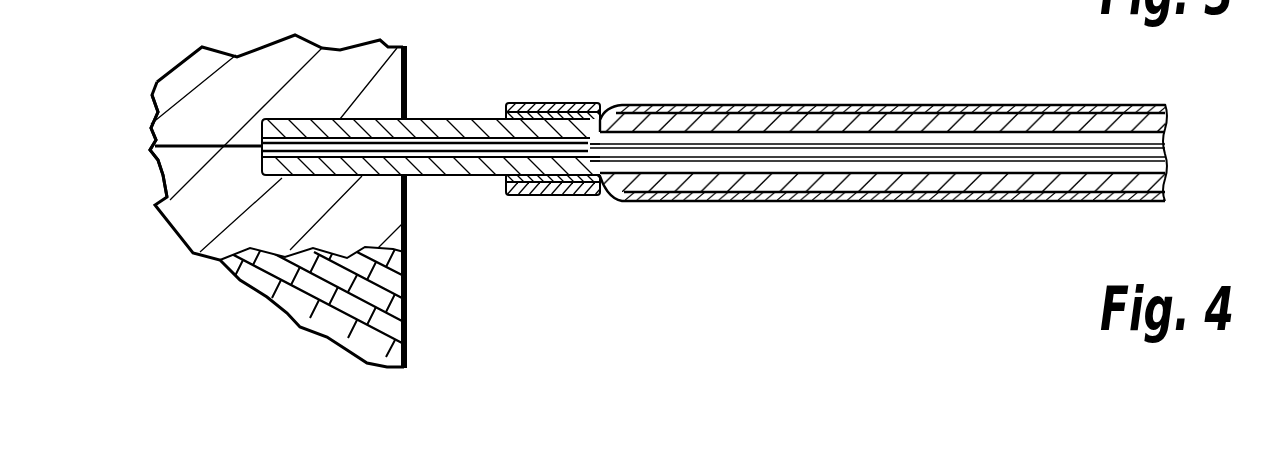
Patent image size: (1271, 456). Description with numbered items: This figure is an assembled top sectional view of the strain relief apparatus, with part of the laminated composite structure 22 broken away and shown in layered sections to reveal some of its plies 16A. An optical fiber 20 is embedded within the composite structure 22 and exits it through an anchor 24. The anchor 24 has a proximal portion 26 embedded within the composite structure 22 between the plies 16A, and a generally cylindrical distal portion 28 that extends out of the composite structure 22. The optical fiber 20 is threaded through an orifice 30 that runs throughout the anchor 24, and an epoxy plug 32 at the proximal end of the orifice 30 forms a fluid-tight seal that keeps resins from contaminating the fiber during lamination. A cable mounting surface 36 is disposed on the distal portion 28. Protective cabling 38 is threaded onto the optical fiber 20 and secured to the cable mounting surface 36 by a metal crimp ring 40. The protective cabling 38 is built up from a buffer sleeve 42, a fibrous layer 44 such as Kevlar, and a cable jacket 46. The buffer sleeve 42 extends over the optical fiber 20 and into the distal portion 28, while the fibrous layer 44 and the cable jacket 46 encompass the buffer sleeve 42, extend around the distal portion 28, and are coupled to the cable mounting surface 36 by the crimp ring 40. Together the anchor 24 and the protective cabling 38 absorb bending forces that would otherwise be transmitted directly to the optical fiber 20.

The plies 16A is at (405, 348).
The optical fiber 20 is at (158, 176).
The laminated composite structure 22 is at (192, 90).
The anchor 24 is at (377, 113).
The proximal portion 26 is at (323, 113).
The distal portion 28 is at (617, 128).
The orifice 30 is at (318, 178).
The epoxy plug 32 is at (258, 146).
The cable mounting surface 36 is at (548, 108).
The protective cabling 38 is at (933, 97).
The crimp ring 40 is at (583, 112).
The buffer sleeve 42 is at (731, 162).
The fibrous layer 44 is at (797, 180).
The cable jacket 46 is at (866, 201).